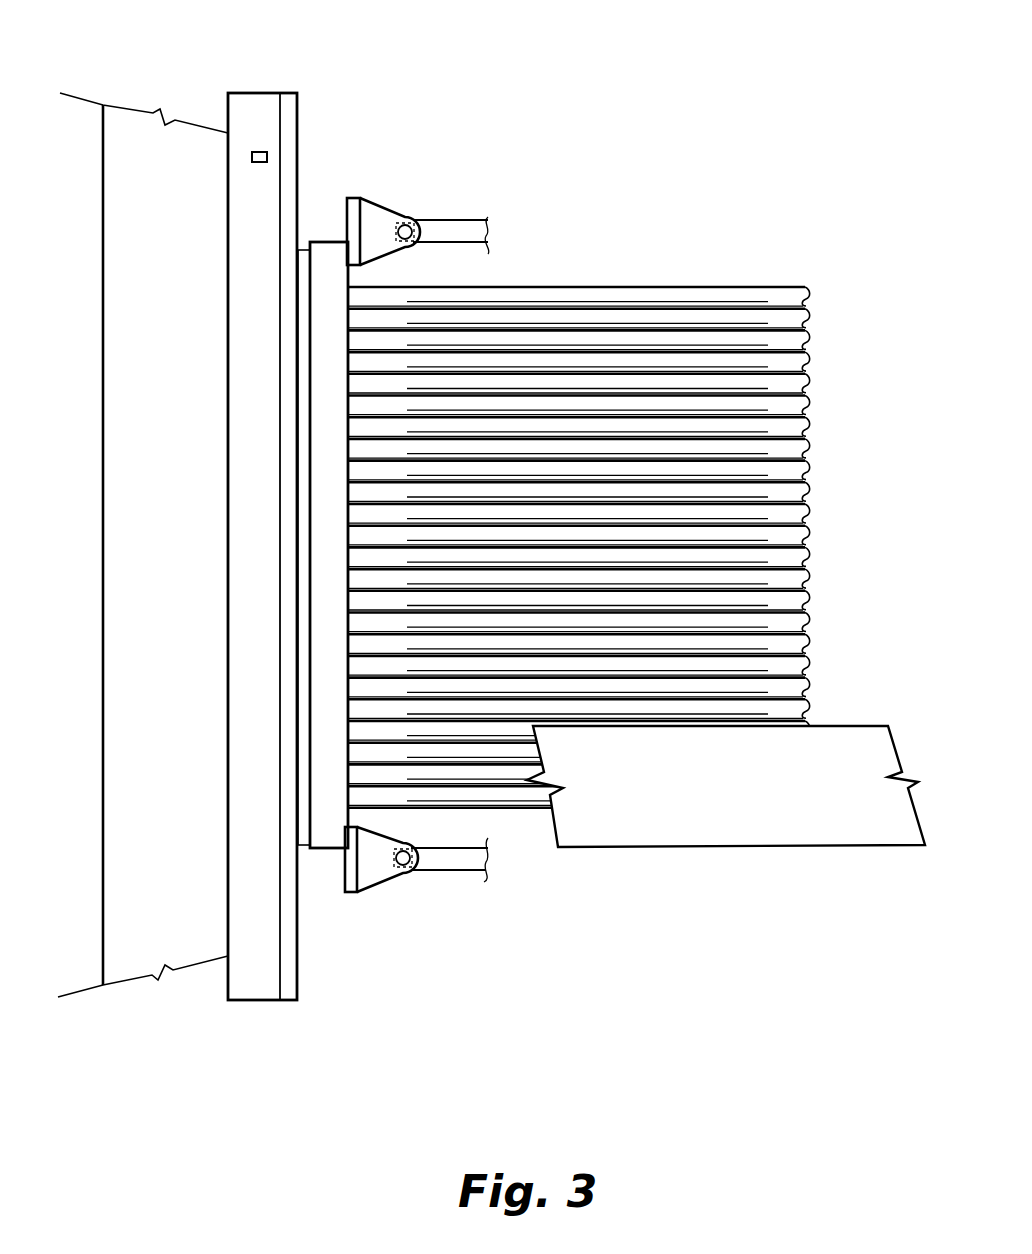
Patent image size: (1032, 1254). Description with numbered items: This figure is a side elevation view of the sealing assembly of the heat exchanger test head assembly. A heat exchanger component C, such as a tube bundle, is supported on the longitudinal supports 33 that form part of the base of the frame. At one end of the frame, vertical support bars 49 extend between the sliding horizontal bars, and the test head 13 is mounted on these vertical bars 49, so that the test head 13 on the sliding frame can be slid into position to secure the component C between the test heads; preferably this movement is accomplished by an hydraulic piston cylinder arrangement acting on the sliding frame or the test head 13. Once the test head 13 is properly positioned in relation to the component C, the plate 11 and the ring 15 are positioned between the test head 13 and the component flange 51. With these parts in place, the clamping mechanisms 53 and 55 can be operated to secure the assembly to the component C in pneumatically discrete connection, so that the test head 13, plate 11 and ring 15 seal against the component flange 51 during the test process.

The plate 11 is at (290, 98).
The test head 13 is at (265, 155).
The ring 15 is at (300, 848).
The longitudinal bar 33 is at (717, 828).
The vertical support bar 49 is at (165, 385).
The component flange 51 is at (325, 250).
The clamping mechanism 53 is at (447, 223).
The clamping mechanism 55 is at (452, 863).
The heat exchanger component C is at (719, 343).